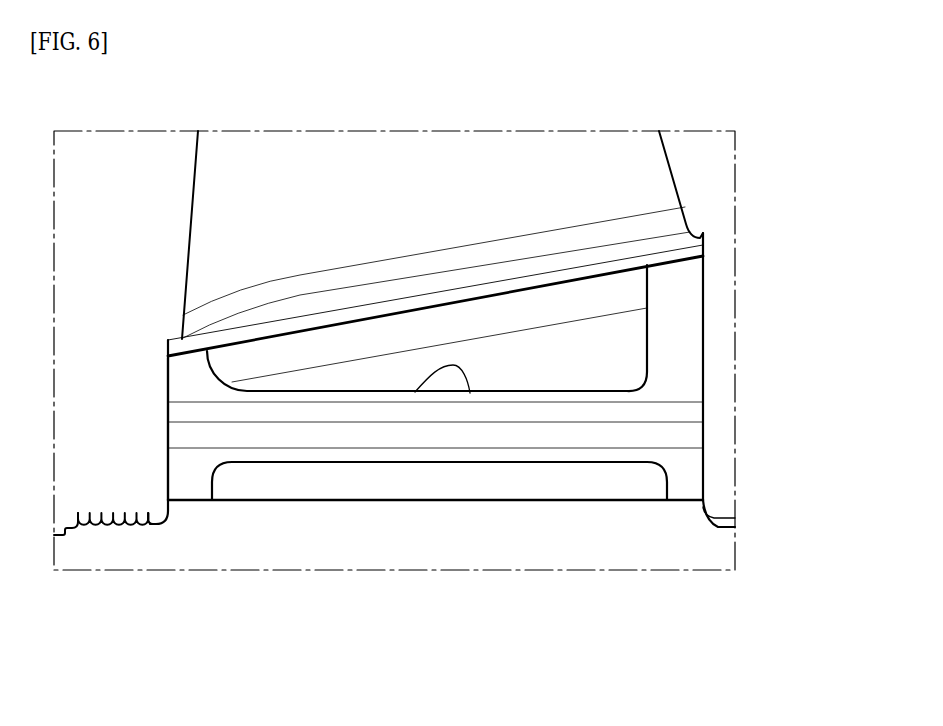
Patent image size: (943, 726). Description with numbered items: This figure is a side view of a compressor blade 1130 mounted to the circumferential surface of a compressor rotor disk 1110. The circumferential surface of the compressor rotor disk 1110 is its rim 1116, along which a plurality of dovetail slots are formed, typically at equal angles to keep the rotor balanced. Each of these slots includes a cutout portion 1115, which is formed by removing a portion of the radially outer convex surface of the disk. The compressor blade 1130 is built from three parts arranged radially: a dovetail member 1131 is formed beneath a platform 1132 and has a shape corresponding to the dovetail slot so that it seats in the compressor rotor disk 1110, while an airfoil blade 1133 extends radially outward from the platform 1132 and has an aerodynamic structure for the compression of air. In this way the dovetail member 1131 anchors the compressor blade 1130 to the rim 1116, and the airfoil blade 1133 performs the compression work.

The compressor rotor disk 1110 is at (316, 512).
The cutout portion 1115 is at (470, 393).
The rim 1116 is at (205, 428).
The compressor blade 1130 is at (542, 261).
The dovetail member 1131 is at (598, 348).
The platform 1132 is at (683, 253).
The airfoil blade 1133 is at (653, 183).